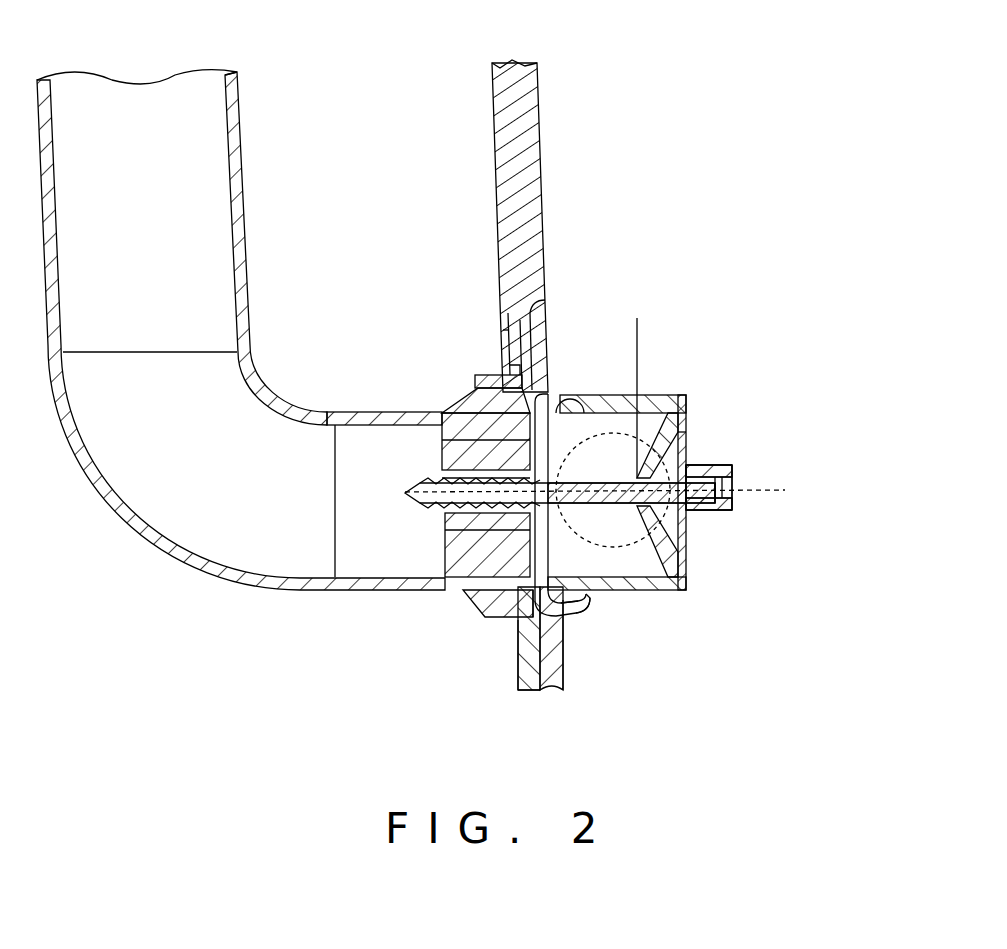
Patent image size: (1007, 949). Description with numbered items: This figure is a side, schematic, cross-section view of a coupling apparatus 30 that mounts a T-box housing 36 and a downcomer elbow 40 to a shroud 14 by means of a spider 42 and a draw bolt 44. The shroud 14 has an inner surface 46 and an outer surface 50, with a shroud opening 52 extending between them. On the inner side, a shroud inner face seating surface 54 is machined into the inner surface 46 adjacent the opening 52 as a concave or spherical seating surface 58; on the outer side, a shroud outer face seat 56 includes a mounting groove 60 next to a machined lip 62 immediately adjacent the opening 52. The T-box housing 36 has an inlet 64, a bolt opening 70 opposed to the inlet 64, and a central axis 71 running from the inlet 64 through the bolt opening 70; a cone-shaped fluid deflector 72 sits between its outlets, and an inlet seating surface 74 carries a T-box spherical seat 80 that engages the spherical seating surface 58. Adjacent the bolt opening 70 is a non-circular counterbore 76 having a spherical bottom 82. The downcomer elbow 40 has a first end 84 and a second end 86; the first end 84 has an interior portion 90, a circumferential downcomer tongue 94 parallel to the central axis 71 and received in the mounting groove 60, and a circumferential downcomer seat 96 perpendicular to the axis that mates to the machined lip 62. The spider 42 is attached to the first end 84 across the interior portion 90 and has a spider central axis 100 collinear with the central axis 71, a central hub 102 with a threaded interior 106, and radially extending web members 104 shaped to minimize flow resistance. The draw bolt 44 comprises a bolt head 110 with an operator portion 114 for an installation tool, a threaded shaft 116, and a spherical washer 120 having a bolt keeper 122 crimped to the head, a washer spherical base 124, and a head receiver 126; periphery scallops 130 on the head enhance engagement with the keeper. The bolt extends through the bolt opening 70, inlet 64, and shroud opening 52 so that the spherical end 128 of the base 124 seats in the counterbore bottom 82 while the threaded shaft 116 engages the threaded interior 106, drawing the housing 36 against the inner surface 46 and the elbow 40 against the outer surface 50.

The shroud 14 is at (508, 270).
The coupling apparatus 30 is at (442, 700).
The T-box housing 36 is at (637, 590).
The downcomer elbow 40 is at (267, 392).
The spider 42 is at (432, 449).
The draw bolt 44 is at (773, 522).
The inner surface 46 is at (550, 357).
The outer surface 50 is at (518, 666).
The shroud opening 52 is at (583, 397).
The shroud inner face seating surface 54 is at (568, 670).
The shroud outer face seat 56 is at (540, 320).
The spherical seating surface 58 is at (510, 628).
The mounting groove 60 is at (508, 335).
The machined lip 62 is at (472, 390).
The inlet 64 is at (513, 607).
The bolt opening 70 is at (637, 325).
The central axis 71 is at (735, 490).
The cone-shaped fluid deflector 72 is at (692, 445).
The inlet seating surface 74 is at (598, 606).
The non-circular counterbore 76 is at (688, 528).
The T-box spherical seat 80 is at (580, 604).
The spherical bottom 82 is at (688, 458).
The first end 84 is at (477, 375).
The second end 86 is at (250, 113).
The interior portion 90 is at (463, 440).
The downcomer tongue 94 is at (512, 375).
The downcomer seat 96 is at (541, 689).
The spider central axis 100 is at (362, 493).
The central hub 102 is at (442, 479).
The web members 104 is at (430, 437).
The threaded interior 106 is at (443, 534).
The bolt head 110 is at (745, 508).
The operator portion 114 is at (735, 492).
The threaded shaft 116 is at (457, 596).
The spherical washer 120 is at (700, 465).
The bolt keeper 122 is at (703, 470).
The washer spherical base 124 is at (697, 512).
The head receiver 126 is at (703, 512).
The spherical end 128 is at (718, 478).
The periphery scallops 130 is at (705, 512).